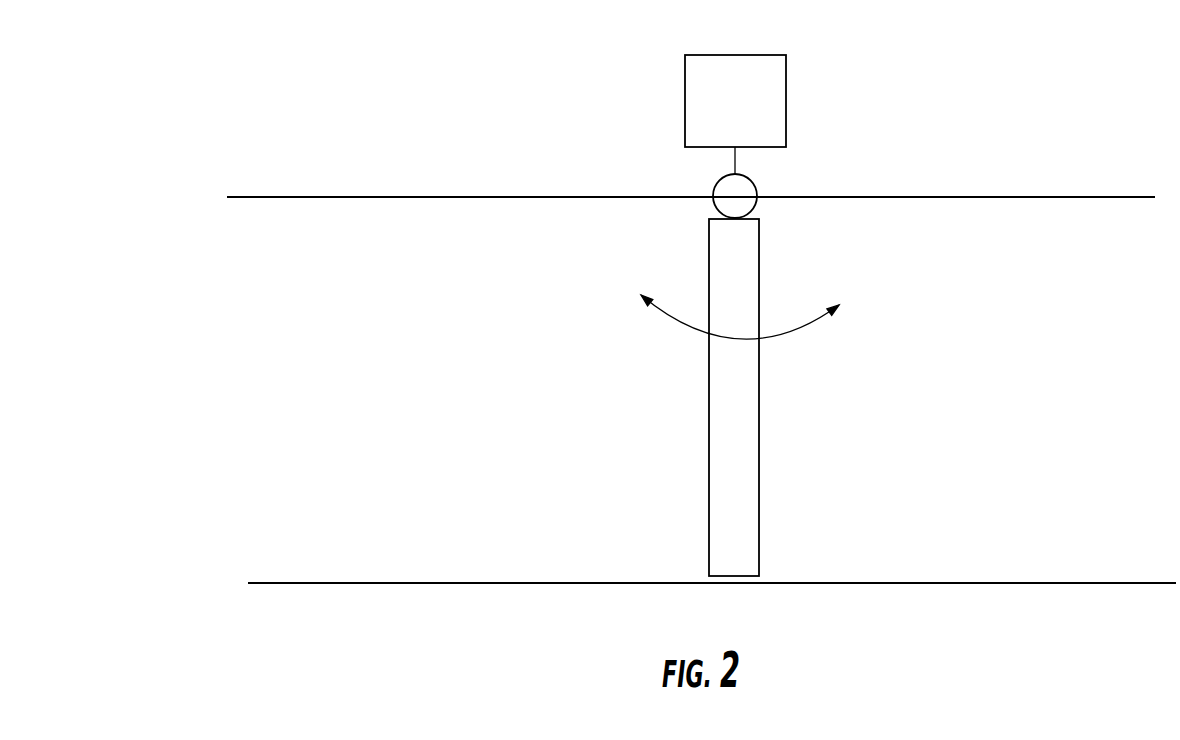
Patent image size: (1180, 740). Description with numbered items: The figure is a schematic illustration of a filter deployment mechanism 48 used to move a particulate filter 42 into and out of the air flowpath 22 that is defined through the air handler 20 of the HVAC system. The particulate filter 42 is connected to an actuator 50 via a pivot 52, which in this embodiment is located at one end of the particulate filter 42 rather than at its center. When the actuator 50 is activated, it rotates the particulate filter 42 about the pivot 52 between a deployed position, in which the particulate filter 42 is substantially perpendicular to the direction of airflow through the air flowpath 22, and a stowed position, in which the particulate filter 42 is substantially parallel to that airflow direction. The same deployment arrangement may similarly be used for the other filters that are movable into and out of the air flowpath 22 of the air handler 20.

The air handler 20 is at (1070, 197).
The air flowpath 22 is at (467, 381).
The particulate filter 42 is at (743, 442).
The filter deployment mechanism 48 is at (468, 79).
The actuator 50 is at (766, 101).
The pivot 52 is at (740, 188).